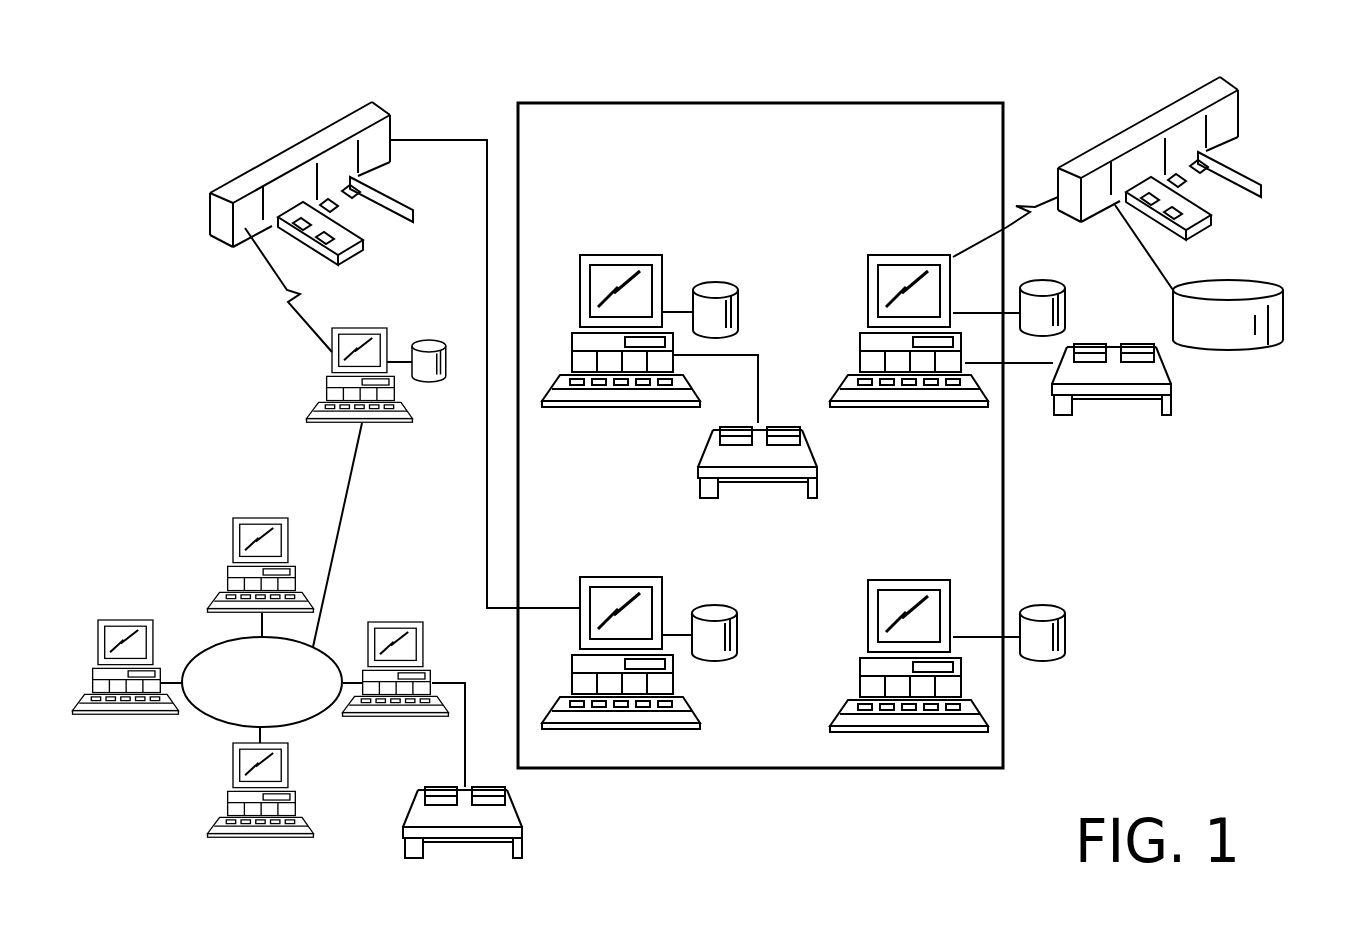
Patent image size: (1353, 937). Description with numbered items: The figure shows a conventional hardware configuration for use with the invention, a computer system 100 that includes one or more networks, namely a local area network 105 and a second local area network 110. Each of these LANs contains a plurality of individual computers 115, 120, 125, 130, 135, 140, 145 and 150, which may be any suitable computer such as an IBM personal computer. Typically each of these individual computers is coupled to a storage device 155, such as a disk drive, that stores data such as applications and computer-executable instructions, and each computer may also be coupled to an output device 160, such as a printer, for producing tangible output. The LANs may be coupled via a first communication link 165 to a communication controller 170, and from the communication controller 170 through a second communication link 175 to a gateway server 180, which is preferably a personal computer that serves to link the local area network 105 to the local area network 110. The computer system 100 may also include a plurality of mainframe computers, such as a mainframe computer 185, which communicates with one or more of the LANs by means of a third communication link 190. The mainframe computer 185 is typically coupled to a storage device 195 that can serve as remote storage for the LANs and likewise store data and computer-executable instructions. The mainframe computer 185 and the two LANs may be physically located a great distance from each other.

The computer system 100 is at (503, 113).
The local area network 105 is at (650, 161).
The local area network 110 is at (230, 727).
The individual computer 115 is at (652, 255).
The individual computer 120 is at (933, 253).
The individual computer 125 is at (652, 577).
The individual computer 130 is at (942, 580).
The individual computer 135 is at (420, 622).
The individual computer 140 is at (293, 787).
The individual computer 145 is at (145, 620).
The individual computer 150 is at (280, 518).
The storage device 155 is at (740, 313).
The output device 160 is at (497, 840).
The first communication link 165 is at (487, 242).
The communication controller 170 is at (238, 187).
The second communication link 175 is at (293, 308).
The gateway server 180 is at (338, 327).
The mainframe computer 185 is at (1237, 120).
The third communication link 190 is at (1028, 198).
The storage device 195 is at (1280, 318).